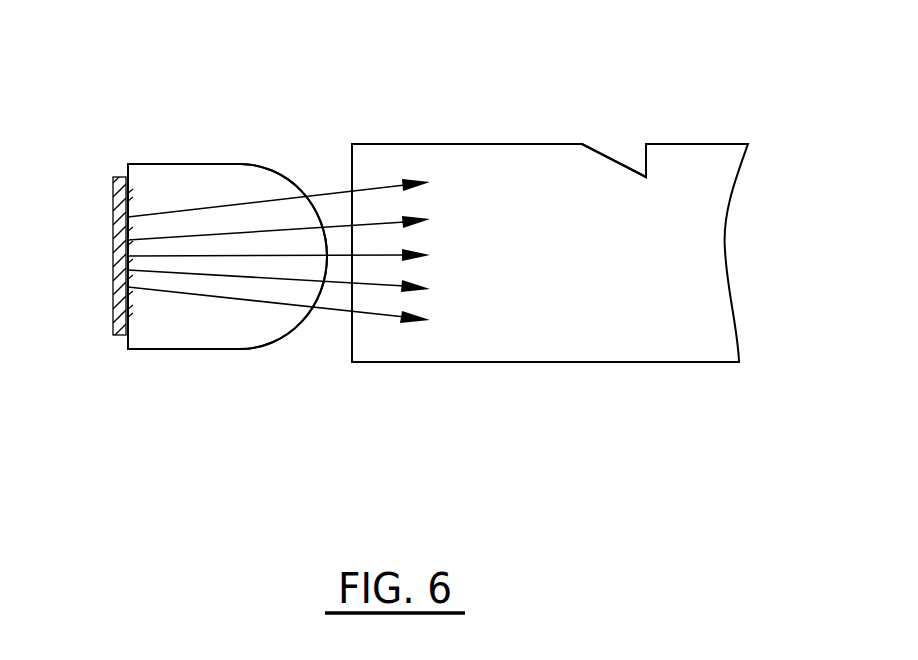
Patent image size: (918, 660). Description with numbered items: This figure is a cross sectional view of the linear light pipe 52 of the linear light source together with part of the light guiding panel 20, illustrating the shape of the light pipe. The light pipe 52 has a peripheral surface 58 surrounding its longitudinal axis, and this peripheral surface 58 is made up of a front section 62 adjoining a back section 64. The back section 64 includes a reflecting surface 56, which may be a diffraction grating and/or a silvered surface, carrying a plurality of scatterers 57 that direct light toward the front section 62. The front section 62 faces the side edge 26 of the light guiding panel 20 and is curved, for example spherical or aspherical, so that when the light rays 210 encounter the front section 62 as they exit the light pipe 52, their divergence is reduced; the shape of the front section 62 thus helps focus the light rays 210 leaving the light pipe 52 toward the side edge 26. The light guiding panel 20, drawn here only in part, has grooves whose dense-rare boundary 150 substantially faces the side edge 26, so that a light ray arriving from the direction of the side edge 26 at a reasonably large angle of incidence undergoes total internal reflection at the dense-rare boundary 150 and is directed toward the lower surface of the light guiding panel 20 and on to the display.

The light guiding panel 20 is at (705, 228).
The side edge 26 is at (352, 356).
The linear light pipe 52 is at (167, 335).
The reflecting surface 56 is at (115, 175).
The scatterers 57 is at (143, 187).
The peripheral surface 58 is at (252, 386).
The front section 62 is at (280, 167).
The back section 64 is at (124, 339).
The dense-rare boundary 150 is at (592, 143).
The light rays 210 is at (322, 150).